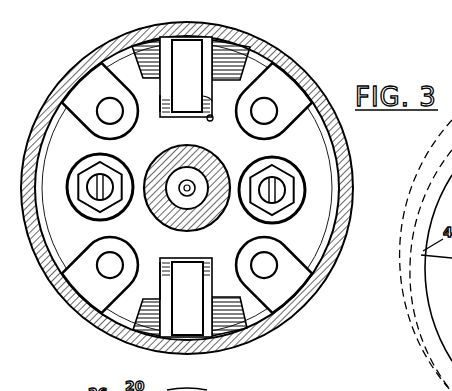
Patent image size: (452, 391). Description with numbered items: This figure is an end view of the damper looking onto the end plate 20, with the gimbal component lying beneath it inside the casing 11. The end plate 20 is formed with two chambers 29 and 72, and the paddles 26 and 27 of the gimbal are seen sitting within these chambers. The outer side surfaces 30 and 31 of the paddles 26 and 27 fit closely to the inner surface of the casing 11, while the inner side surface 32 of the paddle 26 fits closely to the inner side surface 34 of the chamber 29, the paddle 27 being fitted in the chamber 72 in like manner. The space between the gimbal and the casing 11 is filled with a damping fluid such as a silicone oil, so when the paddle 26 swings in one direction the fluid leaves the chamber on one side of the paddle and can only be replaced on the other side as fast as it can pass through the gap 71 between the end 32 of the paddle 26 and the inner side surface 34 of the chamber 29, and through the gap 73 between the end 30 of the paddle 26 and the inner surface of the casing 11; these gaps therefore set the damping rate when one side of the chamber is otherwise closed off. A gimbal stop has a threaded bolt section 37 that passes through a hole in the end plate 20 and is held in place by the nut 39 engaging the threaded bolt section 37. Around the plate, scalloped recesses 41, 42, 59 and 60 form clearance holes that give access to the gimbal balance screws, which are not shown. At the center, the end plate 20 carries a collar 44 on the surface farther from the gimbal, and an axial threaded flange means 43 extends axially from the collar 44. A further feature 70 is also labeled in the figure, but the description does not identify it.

The casing 11 is at (42, 118).
The end plate 20 is at (143, 154).
The paddle 26 is at (197, 97).
The paddle 27 is at (197, 292).
The chamber 29 is at (161, 97).
The side surface 30 is at (186, 77).
The side surface 31 is at (215, 351).
The inner side surface 32 is at (208, 103).
The inner side surface 34 is at (220, 117).
The threaded bolt section 37 is at (270, 187).
The nut 39 is at (263, 202).
The scalloped recess 41 is at (293, 112).
The scalloped recess 42 is at (85, 268).
The axial threaded flange means 43 is at (190, 208).
The collar 44 is at (207, 149).
The scalloped recess 59 is at (290, 282).
The scalloped recess 60 is at (93, 102).
The block 70 is at (137, 46).
The gap 71 is at (190, 112).
The chamber 72 is at (165, 290).
The gap 73 is at (237, 35).